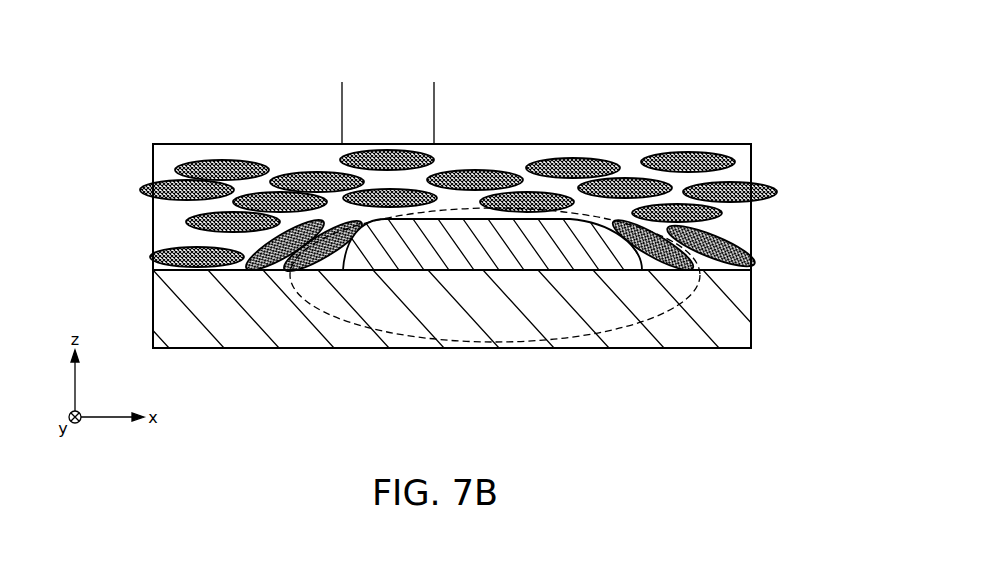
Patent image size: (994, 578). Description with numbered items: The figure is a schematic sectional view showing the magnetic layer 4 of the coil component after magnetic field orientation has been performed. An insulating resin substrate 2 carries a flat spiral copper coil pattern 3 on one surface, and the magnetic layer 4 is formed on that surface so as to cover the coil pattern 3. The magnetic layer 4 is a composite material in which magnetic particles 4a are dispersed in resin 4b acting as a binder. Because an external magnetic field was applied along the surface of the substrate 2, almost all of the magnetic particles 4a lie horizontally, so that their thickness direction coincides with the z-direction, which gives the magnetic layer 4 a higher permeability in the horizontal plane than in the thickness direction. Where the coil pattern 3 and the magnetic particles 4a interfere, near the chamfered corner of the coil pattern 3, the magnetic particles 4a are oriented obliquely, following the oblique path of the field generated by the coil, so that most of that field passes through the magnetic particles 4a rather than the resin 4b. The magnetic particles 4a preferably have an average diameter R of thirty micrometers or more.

The substrate 2 is at (733, 318).
The coil pattern 3 is at (567, 257).
The magnetic layer 4 is at (458, 158).
The magnetic particles 4a is at (563, 69).
The resin 4b is at (518, 144).
The average diameter R is at (342, 96).